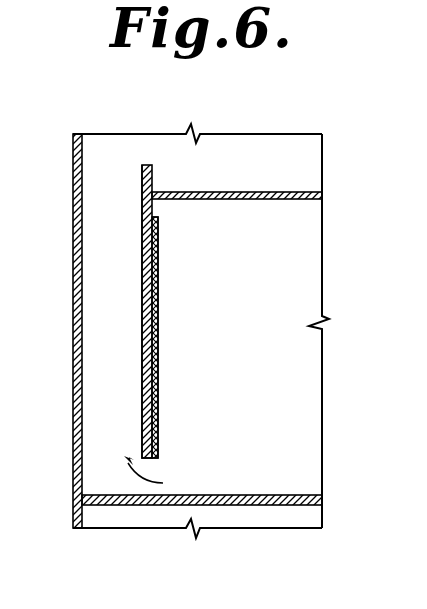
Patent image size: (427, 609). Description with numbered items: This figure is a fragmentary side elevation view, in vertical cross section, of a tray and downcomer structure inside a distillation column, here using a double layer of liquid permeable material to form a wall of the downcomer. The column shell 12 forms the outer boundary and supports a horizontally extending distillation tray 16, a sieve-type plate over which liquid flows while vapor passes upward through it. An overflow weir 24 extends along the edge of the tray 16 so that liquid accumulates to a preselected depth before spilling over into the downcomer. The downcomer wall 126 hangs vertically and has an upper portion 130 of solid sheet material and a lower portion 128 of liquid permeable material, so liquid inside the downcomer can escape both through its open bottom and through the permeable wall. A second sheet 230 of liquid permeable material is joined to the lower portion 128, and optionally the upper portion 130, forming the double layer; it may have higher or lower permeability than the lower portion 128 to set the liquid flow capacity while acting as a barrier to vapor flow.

The column shell 12 is at (73, 238).
The distillation tray 16 is at (251, 494).
The overflow weir 24 is at (153, 178).
The downcomer wall 126 is at (143, 325).
The lower portion 128 is at (163, 474).
The upper portion 130 is at (142, 213).
The second sheet 230 is at (160, 292).